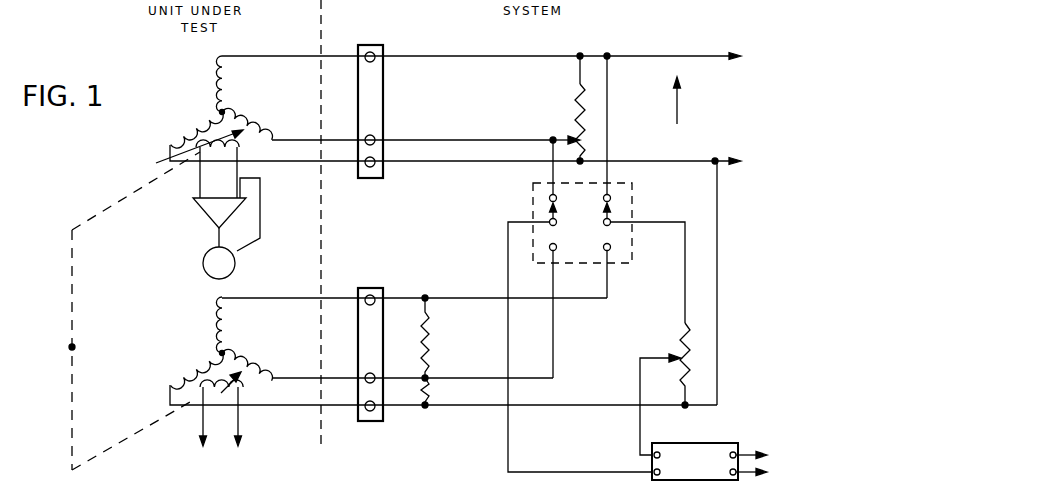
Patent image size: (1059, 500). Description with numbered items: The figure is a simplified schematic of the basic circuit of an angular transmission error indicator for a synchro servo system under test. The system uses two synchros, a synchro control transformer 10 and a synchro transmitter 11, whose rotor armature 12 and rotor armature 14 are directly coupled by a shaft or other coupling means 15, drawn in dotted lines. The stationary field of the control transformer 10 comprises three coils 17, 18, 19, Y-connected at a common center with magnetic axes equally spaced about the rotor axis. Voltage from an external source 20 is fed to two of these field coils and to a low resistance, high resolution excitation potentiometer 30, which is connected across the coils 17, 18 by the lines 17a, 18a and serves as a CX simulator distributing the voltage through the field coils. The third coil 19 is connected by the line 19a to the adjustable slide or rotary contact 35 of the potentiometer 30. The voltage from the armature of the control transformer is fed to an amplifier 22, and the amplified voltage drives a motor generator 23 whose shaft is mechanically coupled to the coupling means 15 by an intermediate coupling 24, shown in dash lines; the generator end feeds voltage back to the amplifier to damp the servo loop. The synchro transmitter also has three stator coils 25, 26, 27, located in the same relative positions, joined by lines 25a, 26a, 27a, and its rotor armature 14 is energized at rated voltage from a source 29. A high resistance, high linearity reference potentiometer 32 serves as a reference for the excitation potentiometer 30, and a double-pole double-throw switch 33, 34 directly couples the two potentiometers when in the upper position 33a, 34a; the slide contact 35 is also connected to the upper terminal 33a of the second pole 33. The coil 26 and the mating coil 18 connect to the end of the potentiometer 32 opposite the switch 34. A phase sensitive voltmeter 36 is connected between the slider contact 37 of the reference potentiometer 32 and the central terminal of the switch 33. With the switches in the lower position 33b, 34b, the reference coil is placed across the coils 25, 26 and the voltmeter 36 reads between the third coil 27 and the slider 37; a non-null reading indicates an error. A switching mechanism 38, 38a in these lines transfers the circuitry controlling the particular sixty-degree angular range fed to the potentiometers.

The synchro control transformer 10 is at (230, 108).
The synchro transmitter 11 is at (230, 349).
The rotor armature of the control transformer 12 is at (168, 162).
The rotor armature of the synchro transmitter 14 is at (236, 391).
The coupling means 15 is at (74, 384).
The field coil 17 is at (216, 76).
The line 17a is at (446, 56).
The field coil 18 is at (190, 126).
The line 18a is at (400, 170).
The field coil 19 is at (248, 126).
The line 19a is at (392, 140).
The external source 20 is at (676, 122).
The amplifier 22 is at (210, 210).
The motor generator 23 is at (236, 268).
The intermediate coupling 24 is at (154, 302).
The field coil 25 is at (216, 320).
The line 25a is at (482, 298).
The field coil 26 is at (200, 362).
The line 26a is at (438, 408).
The field coil 27 is at (260, 365).
The line 27a is at (490, 374).
The source 29 is at (214, 445).
The excitation potentiometer 30 is at (576, 96).
The reference potentiometer 32 is at (694, 382).
The switch pole 33 is at (528, 218).
The upper terminal of switch pole 33 33a is at (548, 196).
The lower terminal of switch pole 33 33b is at (550, 247).
The switch pole 34 is at (626, 218).
The upper terminal of switch pole 34 34a is at (610, 196).
The lower terminal of switch pole 34 34b is at (610, 247).
The adjustable slide or rotary contact 35 is at (564, 138).
The phase sensitive voltmeter 36 is at (682, 484).
The slider contact 37 is at (640, 356).
The switching mechanism 38 is at (383, 88).
The switching mechanism 38a is at (356, 424).